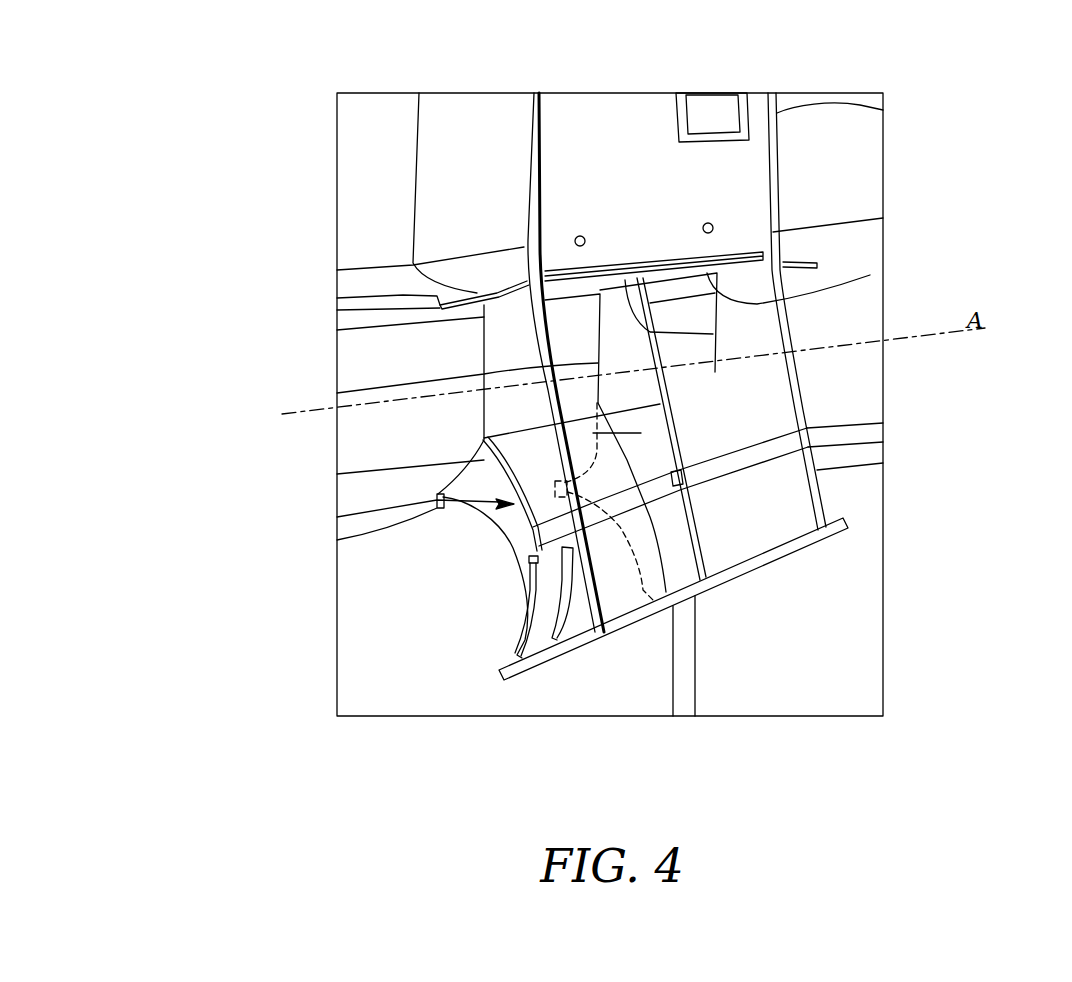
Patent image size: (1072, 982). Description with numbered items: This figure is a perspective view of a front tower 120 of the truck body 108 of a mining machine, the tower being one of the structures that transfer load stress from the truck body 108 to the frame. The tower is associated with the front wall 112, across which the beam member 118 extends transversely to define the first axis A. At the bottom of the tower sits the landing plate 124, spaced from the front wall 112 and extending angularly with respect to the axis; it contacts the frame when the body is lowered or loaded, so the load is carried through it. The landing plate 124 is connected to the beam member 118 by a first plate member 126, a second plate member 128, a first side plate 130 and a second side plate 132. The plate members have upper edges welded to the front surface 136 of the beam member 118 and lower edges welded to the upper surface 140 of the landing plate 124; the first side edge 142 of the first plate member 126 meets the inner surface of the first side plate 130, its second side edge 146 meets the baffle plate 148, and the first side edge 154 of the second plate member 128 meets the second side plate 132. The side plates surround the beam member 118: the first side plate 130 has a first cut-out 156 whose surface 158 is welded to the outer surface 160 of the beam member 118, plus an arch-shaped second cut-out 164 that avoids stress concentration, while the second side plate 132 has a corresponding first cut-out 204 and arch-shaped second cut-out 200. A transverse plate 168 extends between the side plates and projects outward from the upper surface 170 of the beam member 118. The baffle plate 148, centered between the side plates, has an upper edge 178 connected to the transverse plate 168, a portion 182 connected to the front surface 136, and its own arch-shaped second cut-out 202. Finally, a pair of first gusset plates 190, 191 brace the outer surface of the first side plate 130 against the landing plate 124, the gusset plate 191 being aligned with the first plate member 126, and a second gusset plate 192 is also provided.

The truck body 108 is at (300, 88).
The front wall 112 is at (357, 140).
The beam member 118 is at (853, 390).
The front tower 120 is at (855, 160).
The landing plate 124 is at (760, 560).
The first plate member 126 is at (697, 603).
The second plate member 128 is at (707, 570).
The first side plate 130 is at (494, 100).
The second side plate 132 is at (883, 110).
The front surface 136 is at (364, 428).
The upper surface 140 is at (648, 595).
The first side edge 142 is at (468, 540).
The second side edge 146 is at (665, 521).
The baffle plate 148 is at (660, 381).
The first side edge 154 is at (783, 486).
The first cut-out 156 is at (466, 358).
The surface 158 is at (484, 346).
The outer surface 160 is at (402, 275).
The second cut-out 164 is at (440, 520).
The transverse plate 168 is at (775, 284).
The upper surface 170 is at (850, 262).
The upper edge 178 is at (600, 338).
The portion 182 is at (698, 384).
The first gusset plate 190 is at (572, 622).
The first gusset plate 191 is at (533, 645).
The second gusset plate 192 is at (337, 313).
The second cut-out 200 is at (735, 528).
The second cut-out 202 is at (622, 567).
The first cut-out 204 is at (598, 432).